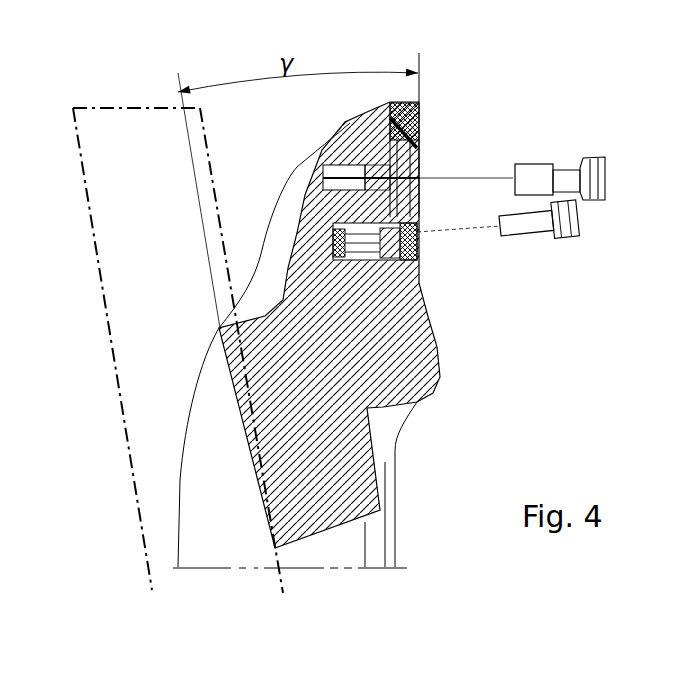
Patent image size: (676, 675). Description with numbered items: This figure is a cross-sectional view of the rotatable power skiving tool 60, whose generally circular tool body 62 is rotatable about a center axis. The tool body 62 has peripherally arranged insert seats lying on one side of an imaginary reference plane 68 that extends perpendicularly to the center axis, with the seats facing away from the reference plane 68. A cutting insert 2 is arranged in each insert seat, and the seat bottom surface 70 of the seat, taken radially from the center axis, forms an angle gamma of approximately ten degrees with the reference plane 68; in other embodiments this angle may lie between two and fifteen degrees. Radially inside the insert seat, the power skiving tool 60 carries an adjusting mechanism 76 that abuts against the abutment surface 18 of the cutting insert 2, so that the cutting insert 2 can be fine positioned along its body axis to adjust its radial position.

The cutting insert 2 is at (410, 156).
The abutment surface 18 is at (417, 217).
The rotatable power skiving tool 60 is at (492, 415).
The tool body 62 is at (412, 311).
The reference plane 68 is at (109, 107).
The seat bottom surface 70 is at (392, 113).
The adjusting mechanism 76 is at (523, 270).